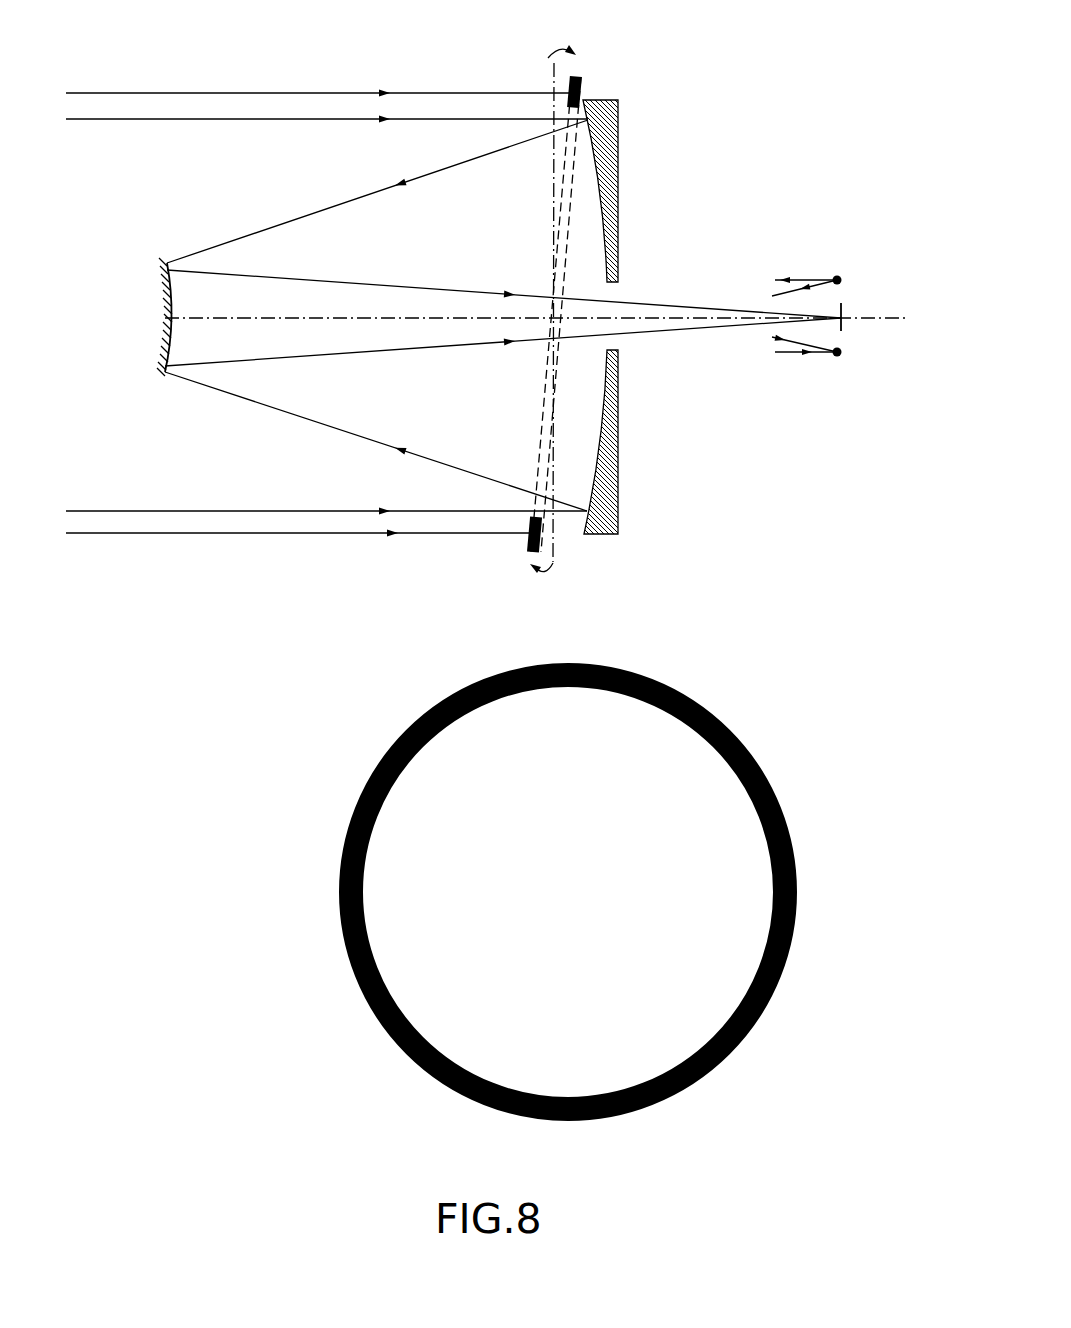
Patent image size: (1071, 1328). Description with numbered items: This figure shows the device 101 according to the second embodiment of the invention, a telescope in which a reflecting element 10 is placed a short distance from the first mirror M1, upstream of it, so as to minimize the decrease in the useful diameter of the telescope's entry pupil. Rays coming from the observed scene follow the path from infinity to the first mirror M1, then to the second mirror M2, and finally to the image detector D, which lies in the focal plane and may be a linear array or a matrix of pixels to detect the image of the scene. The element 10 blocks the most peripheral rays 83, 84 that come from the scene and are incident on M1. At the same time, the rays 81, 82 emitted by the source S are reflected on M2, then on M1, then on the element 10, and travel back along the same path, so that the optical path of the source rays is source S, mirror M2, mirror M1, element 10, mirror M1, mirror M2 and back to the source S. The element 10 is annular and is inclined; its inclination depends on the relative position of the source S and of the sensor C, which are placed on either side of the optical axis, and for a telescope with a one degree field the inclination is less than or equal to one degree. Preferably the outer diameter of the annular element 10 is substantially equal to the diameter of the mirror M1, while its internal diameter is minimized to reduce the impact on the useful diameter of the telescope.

The device 101 is at (258, 78).
The peripheral ray 84 is at (440, 92).
The peripheral ray 83 is at (262, 535).
The reflecting element 10 is at (583, 86).
The first mirror M1 is at (618, 177).
The second mirror M2 is at (165, 352).
The ray 81 is at (789, 278).
The ray 82 is at (822, 280).
The source S is at (838, 277).
The image detector D is at (843, 303).
The sensor C is at (840, 355).